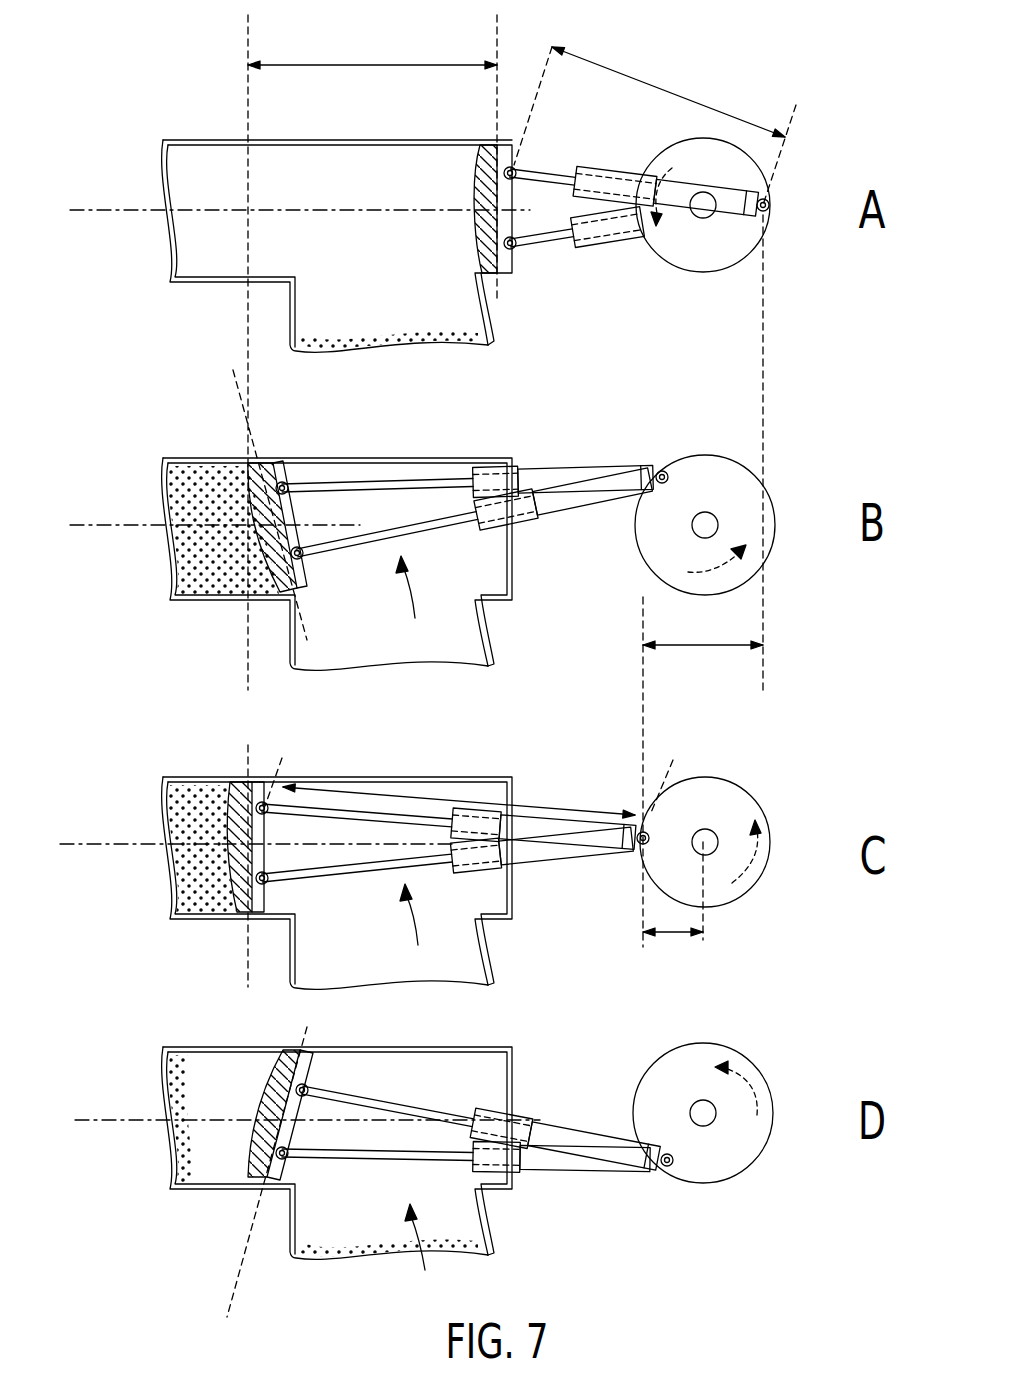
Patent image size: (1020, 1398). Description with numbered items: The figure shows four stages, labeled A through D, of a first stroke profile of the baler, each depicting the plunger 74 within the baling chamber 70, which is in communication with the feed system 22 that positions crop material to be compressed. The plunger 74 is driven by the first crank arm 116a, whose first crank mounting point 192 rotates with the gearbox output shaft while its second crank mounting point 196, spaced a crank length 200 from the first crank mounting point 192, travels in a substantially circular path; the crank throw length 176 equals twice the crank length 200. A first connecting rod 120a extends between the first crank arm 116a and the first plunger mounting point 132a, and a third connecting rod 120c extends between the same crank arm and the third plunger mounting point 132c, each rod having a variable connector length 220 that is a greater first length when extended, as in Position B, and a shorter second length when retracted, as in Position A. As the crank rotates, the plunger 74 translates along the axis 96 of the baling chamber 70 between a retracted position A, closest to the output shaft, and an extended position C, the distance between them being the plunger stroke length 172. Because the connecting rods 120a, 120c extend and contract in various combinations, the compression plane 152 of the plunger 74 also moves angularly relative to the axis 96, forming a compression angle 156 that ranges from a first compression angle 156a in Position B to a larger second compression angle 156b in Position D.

The feed system 22 is at (600, 250).
The baling chamber 70 is at (416, 922).
The plunger 74 is at (490, 245).
The axis 96 is at (112, 202).
The first crank arm 116a is at (702, 262).
The first connecting rod 120a is at (600, 170).
The third connecting rod 120c is at (632, 245).
The first plunger mounting point 132a is at (518, 172).
The third plunger mounting point 132c is at (515, 250).
The compression plane 152 is at (492, 116).
The compression angle 156 is at (470, 205).
The first compression angle 156a is at (253, 527).
The second compression angle 156b is at (257, 1115).
The plunger stroke length 172 is at (336, 63).
The crank throw length 176 is at (725, 643).
The first crank mounting point 192 is at (715, 520).
The second crank mounting point 196 is at (770, 205).
The crank length 200 is at (680, 935).
The connector length 220 is at (670, 93).